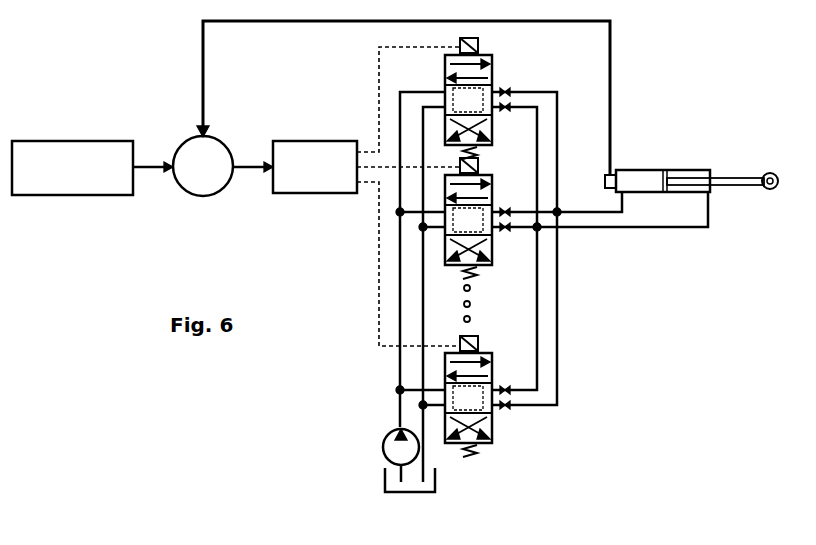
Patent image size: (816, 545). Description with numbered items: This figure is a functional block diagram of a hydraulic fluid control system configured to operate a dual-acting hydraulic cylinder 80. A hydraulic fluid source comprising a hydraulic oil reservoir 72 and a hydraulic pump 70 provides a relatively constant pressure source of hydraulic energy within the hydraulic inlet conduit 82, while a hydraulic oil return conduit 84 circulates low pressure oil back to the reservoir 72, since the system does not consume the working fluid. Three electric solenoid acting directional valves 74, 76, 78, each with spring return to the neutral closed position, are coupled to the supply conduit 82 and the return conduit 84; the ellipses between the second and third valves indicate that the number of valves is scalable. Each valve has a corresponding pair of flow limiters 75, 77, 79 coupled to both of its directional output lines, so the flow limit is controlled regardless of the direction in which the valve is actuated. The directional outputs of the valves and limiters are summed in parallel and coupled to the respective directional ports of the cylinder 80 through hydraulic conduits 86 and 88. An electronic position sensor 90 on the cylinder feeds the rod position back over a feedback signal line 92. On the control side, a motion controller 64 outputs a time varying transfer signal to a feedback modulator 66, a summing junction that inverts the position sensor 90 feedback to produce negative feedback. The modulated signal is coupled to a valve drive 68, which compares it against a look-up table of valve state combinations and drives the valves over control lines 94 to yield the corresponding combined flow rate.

The motion controller 64 is at (87, 141).
The feedback modulator 66 is at (210, 197).
The valve drive 68 is at (313, 141).
The hydraulic pump 70 is at (383, 441).
The hydraulic oil reservoir 72 is at (385, 476).
The directional hydraulic valve 74 is at (492, 128).
The pair of flow limiters 75 is at (505, 88).
The directional hydraulic valve 76 is at (492, 250).
The pair of flow limiters 77 is at (505, 207).
The directional hydraulic valve 78 is at (492, 422).
The pair of flow limiters 79 is at (505, 386).
The dual-acting hydraulic cylinder 80 is at (712, 192).
The hydraulic inlet conduit 82 is at (400, 258).
The hydraulic oil return conduit 84 is at (423, 276).
The hydraulic conduit 86 is at (578, 214).
The hydraulic conduit 88 is at (652, 229).
The electronic position sensor 90 is at (605, 176).
The feedback signal line 92 is at (610, 65).
The valve control lines 94 is at (387, 185).